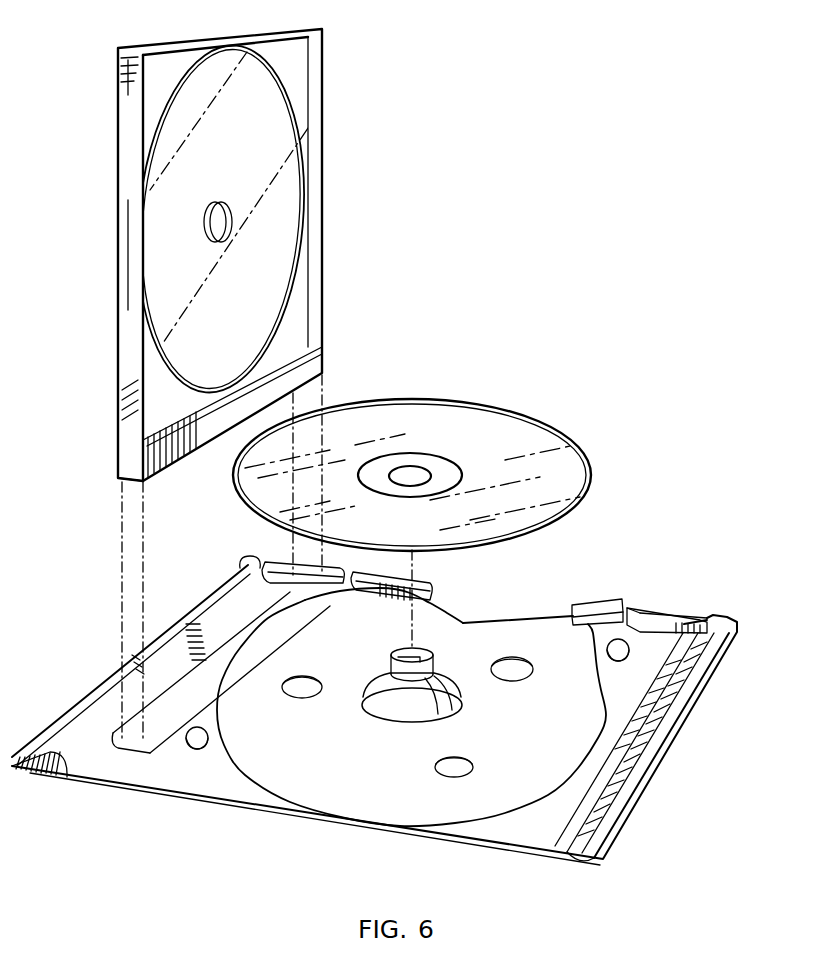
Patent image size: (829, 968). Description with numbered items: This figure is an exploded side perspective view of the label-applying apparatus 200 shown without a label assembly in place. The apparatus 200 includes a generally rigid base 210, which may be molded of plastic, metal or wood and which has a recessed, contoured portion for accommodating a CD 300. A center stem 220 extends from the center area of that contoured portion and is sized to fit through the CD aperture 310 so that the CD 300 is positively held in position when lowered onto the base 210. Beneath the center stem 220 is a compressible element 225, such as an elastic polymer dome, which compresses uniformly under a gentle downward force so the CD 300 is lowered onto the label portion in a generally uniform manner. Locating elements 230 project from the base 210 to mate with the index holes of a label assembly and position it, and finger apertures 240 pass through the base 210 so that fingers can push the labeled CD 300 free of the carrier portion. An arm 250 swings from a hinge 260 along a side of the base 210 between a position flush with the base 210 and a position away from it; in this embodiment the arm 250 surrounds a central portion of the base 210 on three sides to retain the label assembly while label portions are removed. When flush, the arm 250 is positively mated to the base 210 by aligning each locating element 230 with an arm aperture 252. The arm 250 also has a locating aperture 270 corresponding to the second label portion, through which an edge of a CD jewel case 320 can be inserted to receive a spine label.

The apparatus 200 is at (403, 708).
The base 210 is at (517, 637).
The center stem 220 is at (427, 658).
The compressible element 225 is at (393, 705).
The locating element 230 is at (192, 749).
The finger aperture 240 is at (452, 776).
The arm 250 is at (503, 855).
The arm aperture 252 is at (200, 749).
The hinge 260 is at (277, 562).
The locating aperture 270 is at (217, 650).
The CD 300 is at (537, 440).
The CD aperture 310 is at (412, 478).
The CD jewel case 320 is at (322, 80).